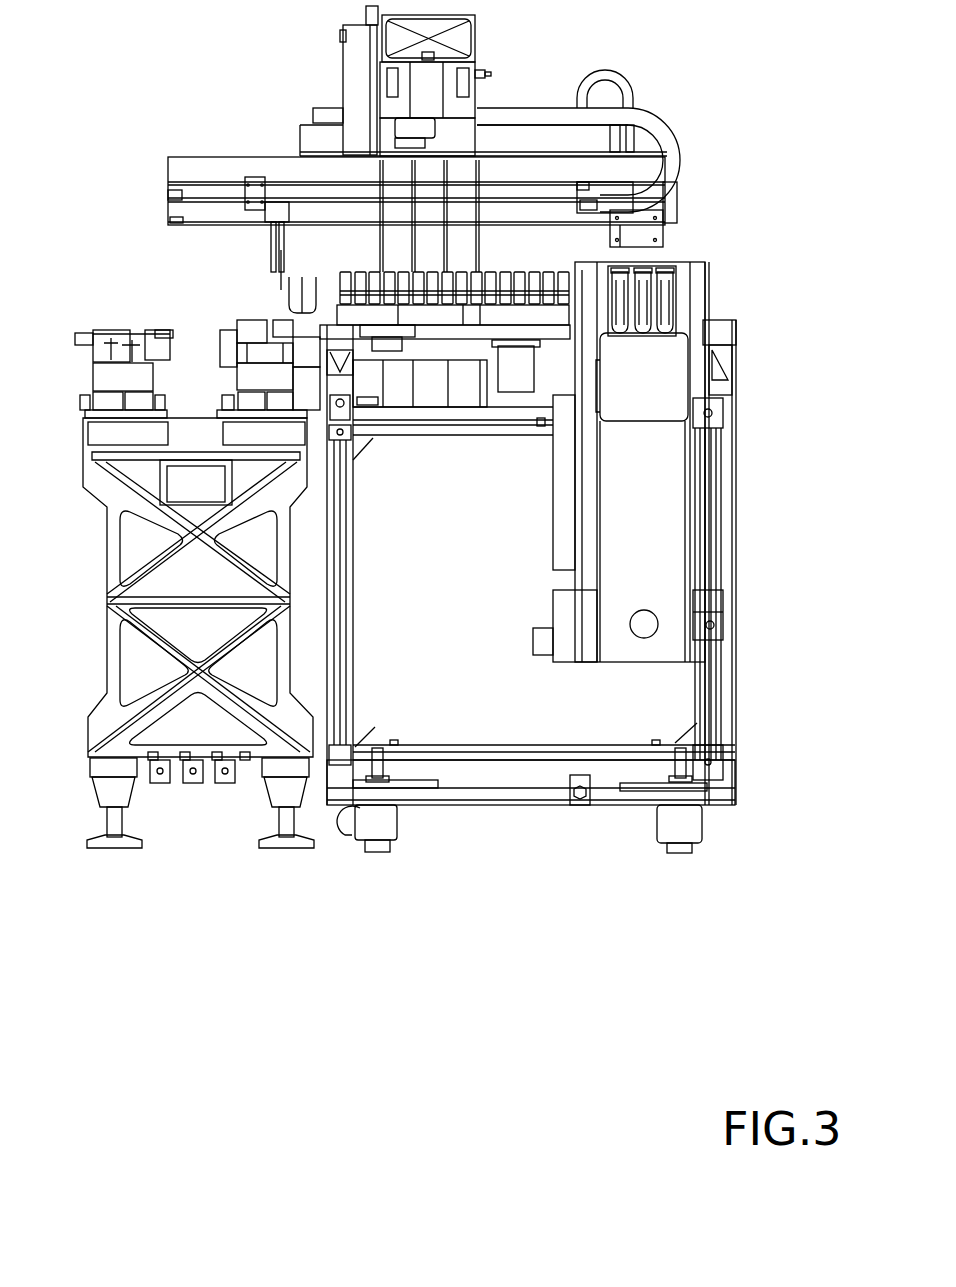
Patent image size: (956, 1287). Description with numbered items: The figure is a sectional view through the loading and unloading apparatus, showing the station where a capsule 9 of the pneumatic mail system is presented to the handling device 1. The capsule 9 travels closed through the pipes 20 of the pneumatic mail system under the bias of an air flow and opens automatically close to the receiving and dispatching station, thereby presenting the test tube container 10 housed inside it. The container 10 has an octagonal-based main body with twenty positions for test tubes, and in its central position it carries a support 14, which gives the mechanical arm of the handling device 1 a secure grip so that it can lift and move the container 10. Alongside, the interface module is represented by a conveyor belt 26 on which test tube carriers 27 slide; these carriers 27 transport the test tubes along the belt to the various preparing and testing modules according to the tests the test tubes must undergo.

The handling device 1 is at (632, 152).
The capsule 9 is at (697, 392).
The test tube container 10 is at (655, 385).
The support 14 is at (657, 264).
The pipes 20 is at (684, 430).
The conveyor belt 26 is at (120, 340).
The carriers 27 is at (247, 337).